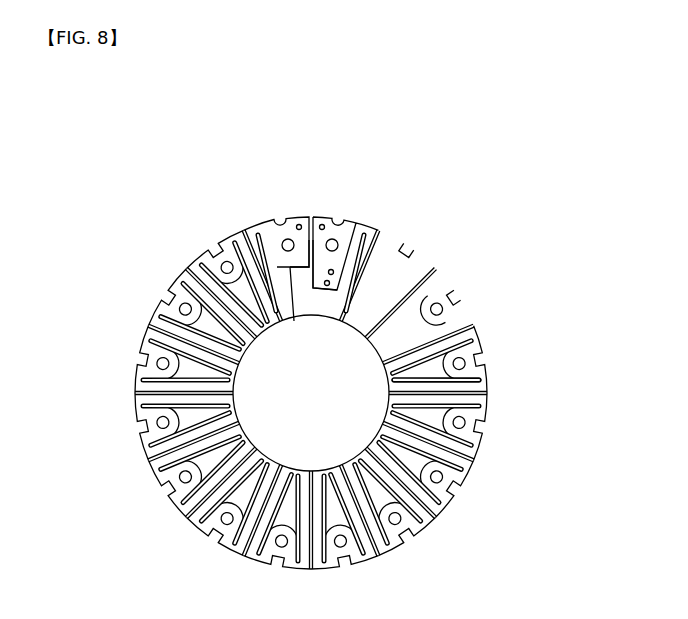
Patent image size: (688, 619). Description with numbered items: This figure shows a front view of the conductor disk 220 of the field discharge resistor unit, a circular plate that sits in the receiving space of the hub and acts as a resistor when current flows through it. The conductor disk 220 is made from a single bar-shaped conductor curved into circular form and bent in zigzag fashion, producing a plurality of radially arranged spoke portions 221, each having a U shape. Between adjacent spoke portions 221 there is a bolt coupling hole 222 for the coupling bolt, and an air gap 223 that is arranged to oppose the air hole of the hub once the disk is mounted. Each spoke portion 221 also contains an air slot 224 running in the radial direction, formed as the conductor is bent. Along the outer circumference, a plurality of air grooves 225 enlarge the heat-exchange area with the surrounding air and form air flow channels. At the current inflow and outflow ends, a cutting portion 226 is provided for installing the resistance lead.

The conductor disk 220 is at (521, 126).
The spoke portion 221 is at (458, 410).
The bolt coupling hole 222 is at (410, 324).
The air gap 223 is at (449, 290).
The air slot 224 is at (460, 384).
The air groove 225 is at (410, 240).
The cutting portion 226 is at (321, 302).